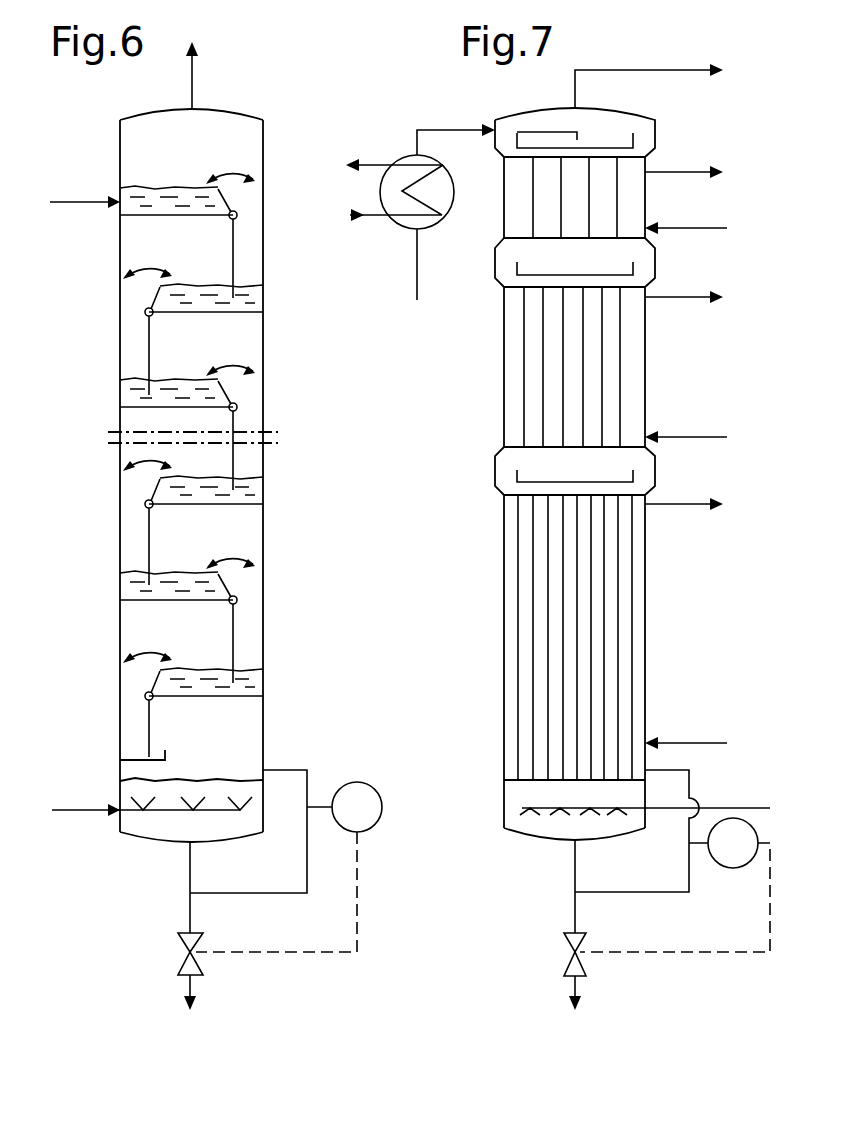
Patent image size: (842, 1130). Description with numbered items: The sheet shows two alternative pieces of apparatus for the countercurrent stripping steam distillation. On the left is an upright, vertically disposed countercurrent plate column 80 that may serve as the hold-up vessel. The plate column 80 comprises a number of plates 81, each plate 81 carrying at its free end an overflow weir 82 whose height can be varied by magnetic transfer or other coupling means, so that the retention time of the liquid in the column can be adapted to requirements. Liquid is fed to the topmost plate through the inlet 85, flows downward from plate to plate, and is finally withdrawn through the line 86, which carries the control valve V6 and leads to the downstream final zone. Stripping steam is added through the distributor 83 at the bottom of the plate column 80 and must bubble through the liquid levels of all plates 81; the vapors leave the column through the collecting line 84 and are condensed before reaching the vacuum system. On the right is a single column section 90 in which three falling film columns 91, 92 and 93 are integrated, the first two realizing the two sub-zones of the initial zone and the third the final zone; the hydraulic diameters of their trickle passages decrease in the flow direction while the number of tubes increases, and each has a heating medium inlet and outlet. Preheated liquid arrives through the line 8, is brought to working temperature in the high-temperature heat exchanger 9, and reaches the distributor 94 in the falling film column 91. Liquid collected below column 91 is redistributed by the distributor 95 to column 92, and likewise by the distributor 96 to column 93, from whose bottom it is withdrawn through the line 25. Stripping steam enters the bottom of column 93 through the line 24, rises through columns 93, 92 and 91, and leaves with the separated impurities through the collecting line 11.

In FIG. 6, the countercurrent plate column 80 is at (272, 366).
In FIG. 6, the plate 81 is at (138, 217).
In FIG. 6, the overflow weir 82 is at (222, 196).
In FIG. 6, the distributor 83 is at (160, 810).
In FIG. 6, the collecting line 84 is at (191, 72).
In FIG. 6, the inlet 85 is at (63, 202).
In FIG. 6, the line 86 is at (190, 883).
In FIG. 6, the control valve V6 is at (200, 963).
In FIG. 7, the column section 90 is at (492, 350).
In FIG. 7, the falling film column 91 is at (646, 193).
In FIG. 7, the falling film column 92 is at (645, 363).
In FIG. 7, the falling film column 93 is at (645, 640).
In FIG. 7, the distributor 94 is at (633, 138).
In FIG. 7, the distributor 95 is at (633, 268).
In FIG. 7, the distributor 96 is at (633, 476).
In FIG. 7, the collecting line 11 is at (627, 70).
In FIG. 7, the high-temperature heat exchanger 9 is at (402, 160).
In FIG. 7, the line 8 is at (417, 262).
In FIG. 7, the line 24 is at (718, 808).
In FIG. 7, the line 25 is at (575, 910).